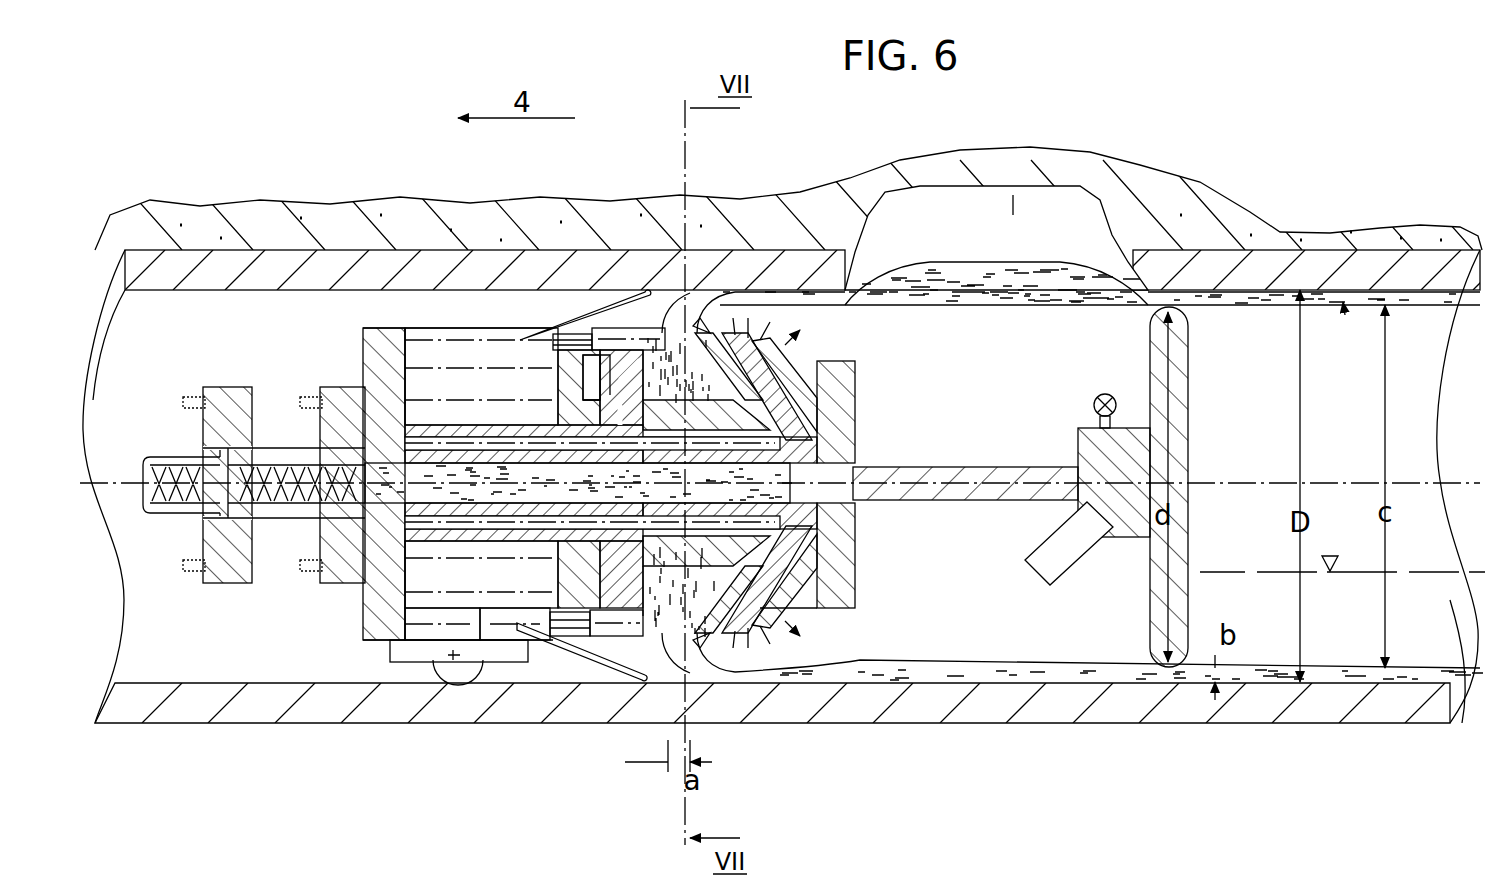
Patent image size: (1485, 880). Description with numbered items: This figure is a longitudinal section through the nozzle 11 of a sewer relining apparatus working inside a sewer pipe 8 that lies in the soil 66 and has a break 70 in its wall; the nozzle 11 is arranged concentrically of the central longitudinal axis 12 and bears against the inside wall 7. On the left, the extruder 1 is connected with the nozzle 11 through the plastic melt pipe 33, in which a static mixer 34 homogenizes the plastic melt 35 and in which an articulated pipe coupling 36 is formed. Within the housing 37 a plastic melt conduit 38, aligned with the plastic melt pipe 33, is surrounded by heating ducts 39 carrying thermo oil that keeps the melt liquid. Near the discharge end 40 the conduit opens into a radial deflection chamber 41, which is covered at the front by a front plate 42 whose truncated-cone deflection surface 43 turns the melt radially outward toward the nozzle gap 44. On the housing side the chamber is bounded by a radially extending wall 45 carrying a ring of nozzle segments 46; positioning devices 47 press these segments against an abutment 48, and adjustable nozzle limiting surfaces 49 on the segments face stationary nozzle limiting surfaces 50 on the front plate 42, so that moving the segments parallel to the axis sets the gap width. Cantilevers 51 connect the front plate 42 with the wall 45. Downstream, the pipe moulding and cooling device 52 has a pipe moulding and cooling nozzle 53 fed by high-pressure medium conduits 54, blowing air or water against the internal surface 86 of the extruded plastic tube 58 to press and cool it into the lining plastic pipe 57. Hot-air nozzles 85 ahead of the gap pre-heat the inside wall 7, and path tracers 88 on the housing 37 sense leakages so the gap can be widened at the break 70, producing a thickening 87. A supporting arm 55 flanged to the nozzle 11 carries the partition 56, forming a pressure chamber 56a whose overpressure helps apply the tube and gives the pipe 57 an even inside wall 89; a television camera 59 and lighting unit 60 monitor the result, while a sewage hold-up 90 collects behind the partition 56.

The twin-shaft extruder 1 is at (1013, 187).
The inside wall 7 is at (155, 292).
The sewer pipe 8 is at (205, 268).
The nozzle 11 is at (373, 652).
The central longitudinal axis 12 is at (120, 483).
The plastic melt pipe 33 is at (152, 460).
The static mixer 34 is at (176, 470).
The plastic melt 35 is at (330, 520).
The articulated pipe coupling 36 is at (222, 388).
The housing 37 is at (374, 382).
The plastic melt conduit 38 is at (437, 430).
The heating ducts 39 is at (473, 443).
The discharge end 40 is at (755, 500).
The radial deflection chamber 41 is at (832, 592).
The front plate 42 is at (795, 398).
The deflection surface 43 is at (724, 392).
The nozzle gap 44 is at (706, 345).
The wall 45 is at (582, 360).
The nozzle segments 46 is at (621, 340).
The positioning devices 47 is at (483, 340).
The abutment 48 is at (385, 340).
The adjustable nozzle limiting surfaces 49 is at (665, 340).
The stationary nozzle limiting surfaces 50 is at (745, 345).
The cantilevers 51 is at (760, 443).
The pipe moulding and cooling device 52 is at (770, 345).
The pipe moulding and cooling nozzle 53 is at (765, 340).
The high-pressure medium conduits 54 is at (578, 330).
The supporting arm 55 is at (1000, 468).
The partition 56 is at (1190, 376).
The pressure chamber 56a is at (963, 637).
The plastic pipe 57 is at (1230, 296).
The plastic tube 58 is at (706, 652).
The television camera 59 is at (1068, 545).
The lighting unit 60 is at (1105, 394).
The soil 66 is at (1185, 225).
The break 70 is at (996, 238).
The hot-air nozzles 85 is at (563, 397).
The internal surface 86 is at (818, 308).
The thickening 87 is at (955, 285).
The path tracers 88 is at (563, 640).
The inside wall 89 is at (1340, 324).
The sewage hold-up 90 is at (1435, 572).